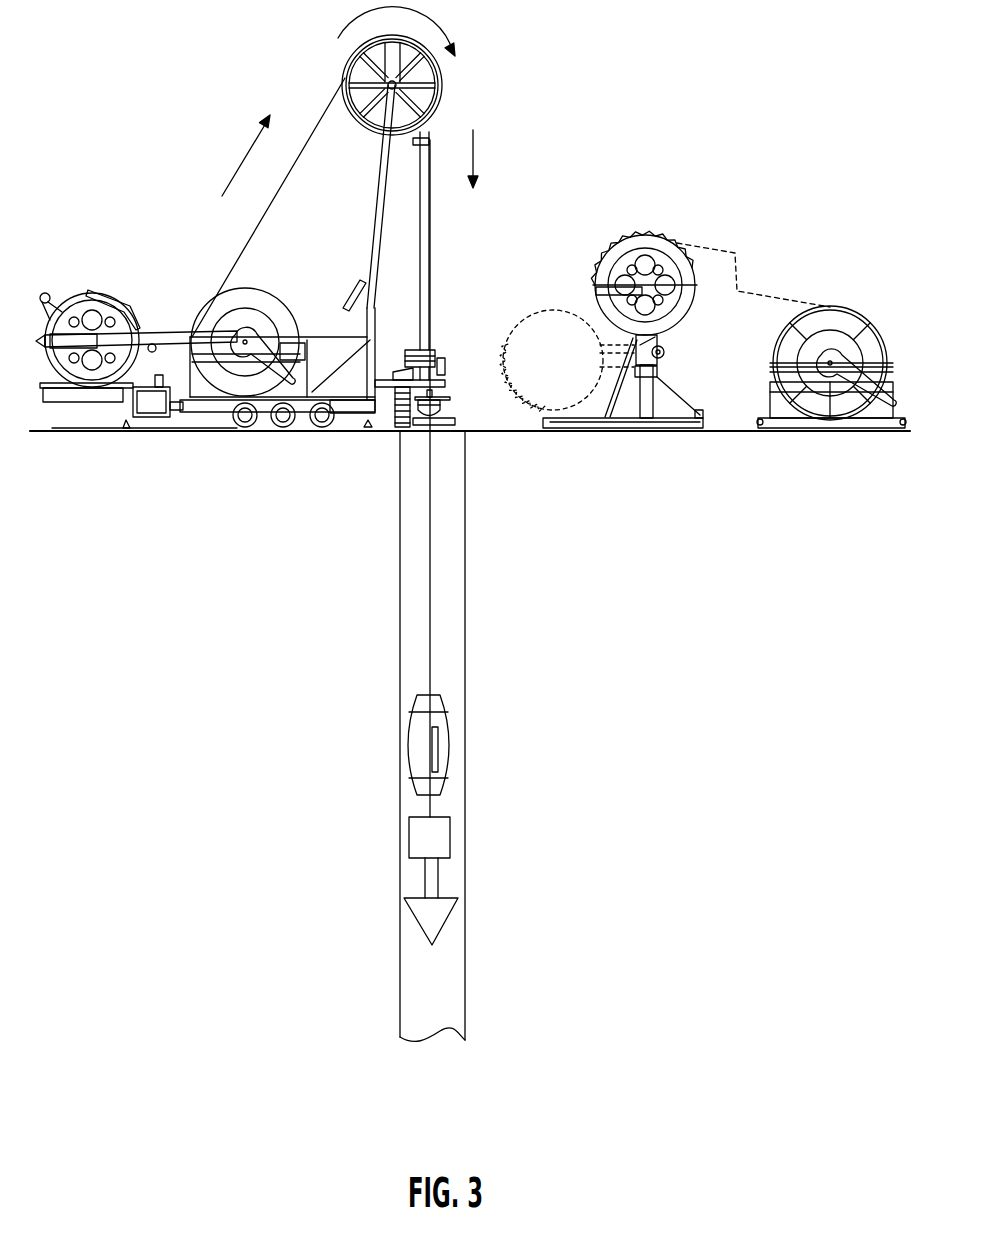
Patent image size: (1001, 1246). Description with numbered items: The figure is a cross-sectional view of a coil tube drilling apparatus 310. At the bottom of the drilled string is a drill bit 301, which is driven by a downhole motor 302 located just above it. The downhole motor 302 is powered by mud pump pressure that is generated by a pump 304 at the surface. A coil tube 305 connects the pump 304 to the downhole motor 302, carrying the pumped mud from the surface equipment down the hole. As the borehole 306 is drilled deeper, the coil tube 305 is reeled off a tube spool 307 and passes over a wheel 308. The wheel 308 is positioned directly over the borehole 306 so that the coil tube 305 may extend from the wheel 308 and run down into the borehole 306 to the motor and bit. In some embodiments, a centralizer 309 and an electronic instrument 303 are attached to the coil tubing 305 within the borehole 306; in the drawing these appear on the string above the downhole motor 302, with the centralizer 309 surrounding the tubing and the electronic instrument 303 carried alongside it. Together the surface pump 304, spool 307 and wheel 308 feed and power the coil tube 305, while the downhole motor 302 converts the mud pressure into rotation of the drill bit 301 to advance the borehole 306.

The drill bit 301 is at (445, 920).
The downhole motor 302 is at (452, 843).
The electronic instrument 303 is at (438, 742).
The pump 304 is at (243, 340).
The coil tube 305 is at (433, 587).
The borehole 306 is at (425, 997).
The tube spool 307 is at (268, 292).
The wheel 308 is at (443, 85).
The centralizer 309 is at (410, 720).
The coil tube drilling apparatus 310 is at (494, 220).